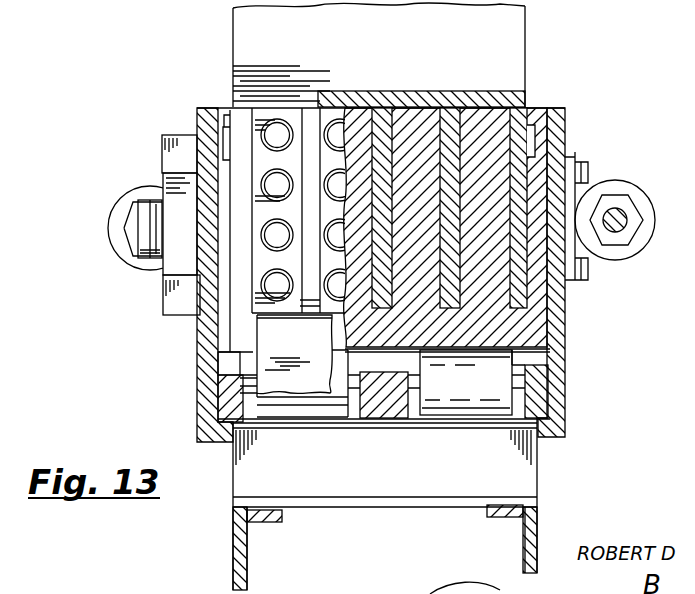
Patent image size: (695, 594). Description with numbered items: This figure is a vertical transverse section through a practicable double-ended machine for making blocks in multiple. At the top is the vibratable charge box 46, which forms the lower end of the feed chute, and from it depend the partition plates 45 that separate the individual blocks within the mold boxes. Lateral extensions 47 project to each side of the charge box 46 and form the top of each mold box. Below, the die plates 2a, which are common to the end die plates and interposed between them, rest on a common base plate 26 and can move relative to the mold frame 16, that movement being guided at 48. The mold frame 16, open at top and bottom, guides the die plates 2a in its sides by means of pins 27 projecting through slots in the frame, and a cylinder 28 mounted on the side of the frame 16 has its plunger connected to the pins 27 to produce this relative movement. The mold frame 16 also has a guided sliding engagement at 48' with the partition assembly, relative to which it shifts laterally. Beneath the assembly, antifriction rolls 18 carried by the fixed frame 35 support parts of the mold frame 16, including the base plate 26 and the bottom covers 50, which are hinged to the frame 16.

The vibratable charge box 46 is at (518, 27).
The lateral extensions 47 is at (267, 102).
The guided sliding engagement 48' is at (410, 113).
The partition plates 45 is at (380, 107).
The die plates 2a is at (470, 125).
The pins 27 is at (162, 143).
The cylinder 28 is at (128, 197).
The mold frame 16 is at (218, 352).
The base plate 26 is at (490, 333).
The bottom covers 50 is at (302, 366).
The guide 48 is at (389, 396).
The antifriction rolls 18 is at (310, 407).
The fixed frame 35 is at (384, 503).